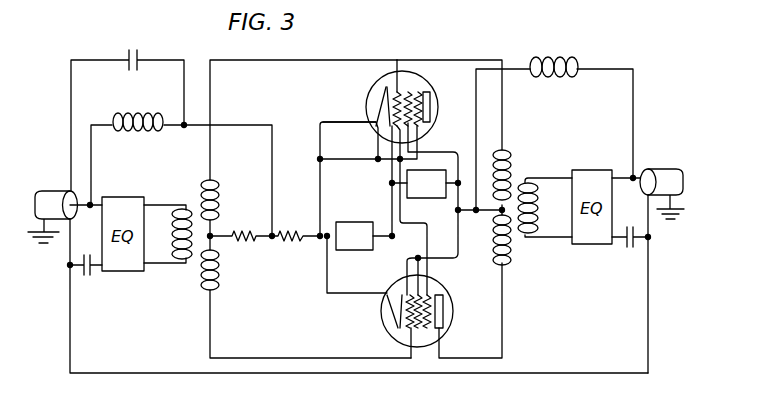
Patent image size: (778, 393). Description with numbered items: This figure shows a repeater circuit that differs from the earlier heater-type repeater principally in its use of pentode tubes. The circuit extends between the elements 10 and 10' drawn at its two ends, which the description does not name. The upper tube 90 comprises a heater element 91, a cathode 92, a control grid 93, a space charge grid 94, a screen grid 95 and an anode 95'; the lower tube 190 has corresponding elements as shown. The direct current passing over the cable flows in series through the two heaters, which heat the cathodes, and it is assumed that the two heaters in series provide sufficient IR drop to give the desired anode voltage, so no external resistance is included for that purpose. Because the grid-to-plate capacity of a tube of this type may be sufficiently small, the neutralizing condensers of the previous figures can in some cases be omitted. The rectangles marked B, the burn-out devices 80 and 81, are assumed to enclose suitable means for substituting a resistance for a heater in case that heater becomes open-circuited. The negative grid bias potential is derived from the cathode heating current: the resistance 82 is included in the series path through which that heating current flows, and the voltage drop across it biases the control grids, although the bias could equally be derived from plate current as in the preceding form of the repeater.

The transmitter 10 is at (53, 204).
The receiver 10' is at (662, 180).
The burn-out device 80 is at (417, 199).
The burn-out device 81 is at (363, 251).
The resistance 82 is at (301, 244).
The tube 90 is at (376, 127).
The heater element 91 is at (384, 97).
The cathode 92 is at (378, 111).
The control grid 93 is at (393, 92).
The space charge grid 94 is at (408, 92).
The screen grid 95 is at (435, 96).
The anode 95' is at (444, 107).
The tube 190 is at (381, 319).